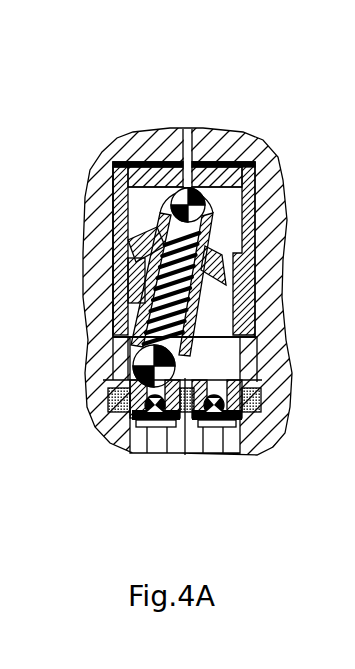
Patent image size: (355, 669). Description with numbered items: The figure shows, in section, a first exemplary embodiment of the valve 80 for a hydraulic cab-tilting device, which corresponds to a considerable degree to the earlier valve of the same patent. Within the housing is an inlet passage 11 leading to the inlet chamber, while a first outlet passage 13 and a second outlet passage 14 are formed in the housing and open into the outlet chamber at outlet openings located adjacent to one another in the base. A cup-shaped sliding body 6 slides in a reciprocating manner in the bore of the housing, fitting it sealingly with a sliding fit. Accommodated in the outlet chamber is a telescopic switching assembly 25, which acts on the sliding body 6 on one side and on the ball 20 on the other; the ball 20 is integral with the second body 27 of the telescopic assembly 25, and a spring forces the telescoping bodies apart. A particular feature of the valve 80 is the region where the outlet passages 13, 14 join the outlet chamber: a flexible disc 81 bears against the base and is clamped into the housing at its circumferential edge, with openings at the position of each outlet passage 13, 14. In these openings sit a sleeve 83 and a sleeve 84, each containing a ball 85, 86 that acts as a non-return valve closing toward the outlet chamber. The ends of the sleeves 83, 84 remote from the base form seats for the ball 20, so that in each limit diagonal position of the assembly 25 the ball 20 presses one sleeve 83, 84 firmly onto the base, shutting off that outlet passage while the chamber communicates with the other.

The valve 80 is at (88, 113).
The inlet passage 11 is at (182, 138).
The sliding body 6 is at (243, 212).
The switching assembly 25 is at (216, 305).
The second body 27 is at (170, 340).
The ball 20 is at (133, 357).
The flexible disc 81 is at (111, 389).
The sleeve 83 is at (110, 400).
The sleeve 84 is at (263, 388).
The ball 85 is at (118, 433).
The ball 86 is at (245, 415).
The first outlet passage 13 is at (155, 427).
The second outlet passage 14 is at (213, 427).